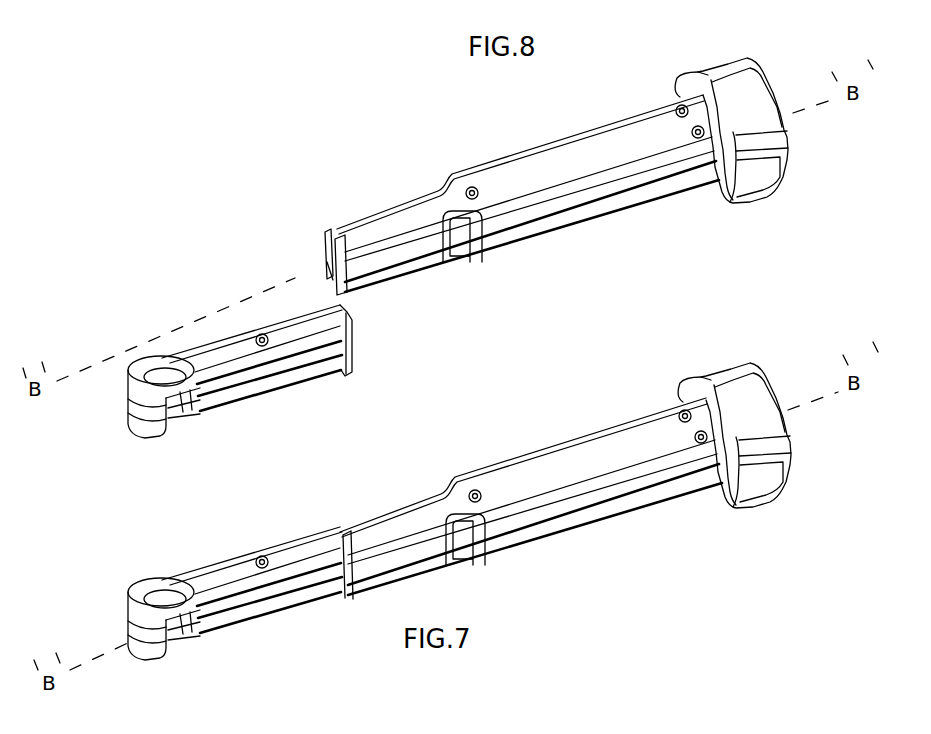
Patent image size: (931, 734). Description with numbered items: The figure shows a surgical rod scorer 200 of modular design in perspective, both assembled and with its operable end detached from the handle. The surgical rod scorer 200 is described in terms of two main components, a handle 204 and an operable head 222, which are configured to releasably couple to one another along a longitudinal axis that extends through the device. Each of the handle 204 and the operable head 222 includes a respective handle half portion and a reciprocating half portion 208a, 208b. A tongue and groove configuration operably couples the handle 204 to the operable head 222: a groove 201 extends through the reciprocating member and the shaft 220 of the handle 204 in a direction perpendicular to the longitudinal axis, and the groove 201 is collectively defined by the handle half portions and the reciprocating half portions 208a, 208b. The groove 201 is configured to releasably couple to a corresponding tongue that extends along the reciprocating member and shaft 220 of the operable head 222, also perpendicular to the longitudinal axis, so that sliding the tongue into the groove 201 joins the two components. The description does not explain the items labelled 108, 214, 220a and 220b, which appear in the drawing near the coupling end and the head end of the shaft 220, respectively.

In FIG. 8, the surgical rod scorer 200 is at (271, 163).
In FIG. 7, the surgical rod scorer 200 is at (661, 344).
In FIG. 8, the handle 204 is at (528, 147).
In FIG. 7, the handle 204 is at (504, 463).
In FIG. 8, the reciprocating half portion 208a is at (332, 268).
In FIG. 8, the reciprocating half portion 208b is at (322, 262).
In FIG. 8, the groove 201 is at (338, 230).
In FIG. 8, the connector flange 108 is at (318, 271).
In FIG. 8, the end cap head 214 is at (749, 58).
In FIG. 7, the end cap head 214 is at (752, 363).
In FIG. 8, the shaft 220 is at (357, 221).
In FIG. 7, the shaft 220 is at (386, 515).
In FIG. 8, the first channel portion 220a is at (374, 246).
In FIG. 8, the second channel portion 220b is at (348, 294).
In FIG. 8, the operable head 222 is at (142, 357).
In FIG. 7, the operable head 222 is at (148, 579).